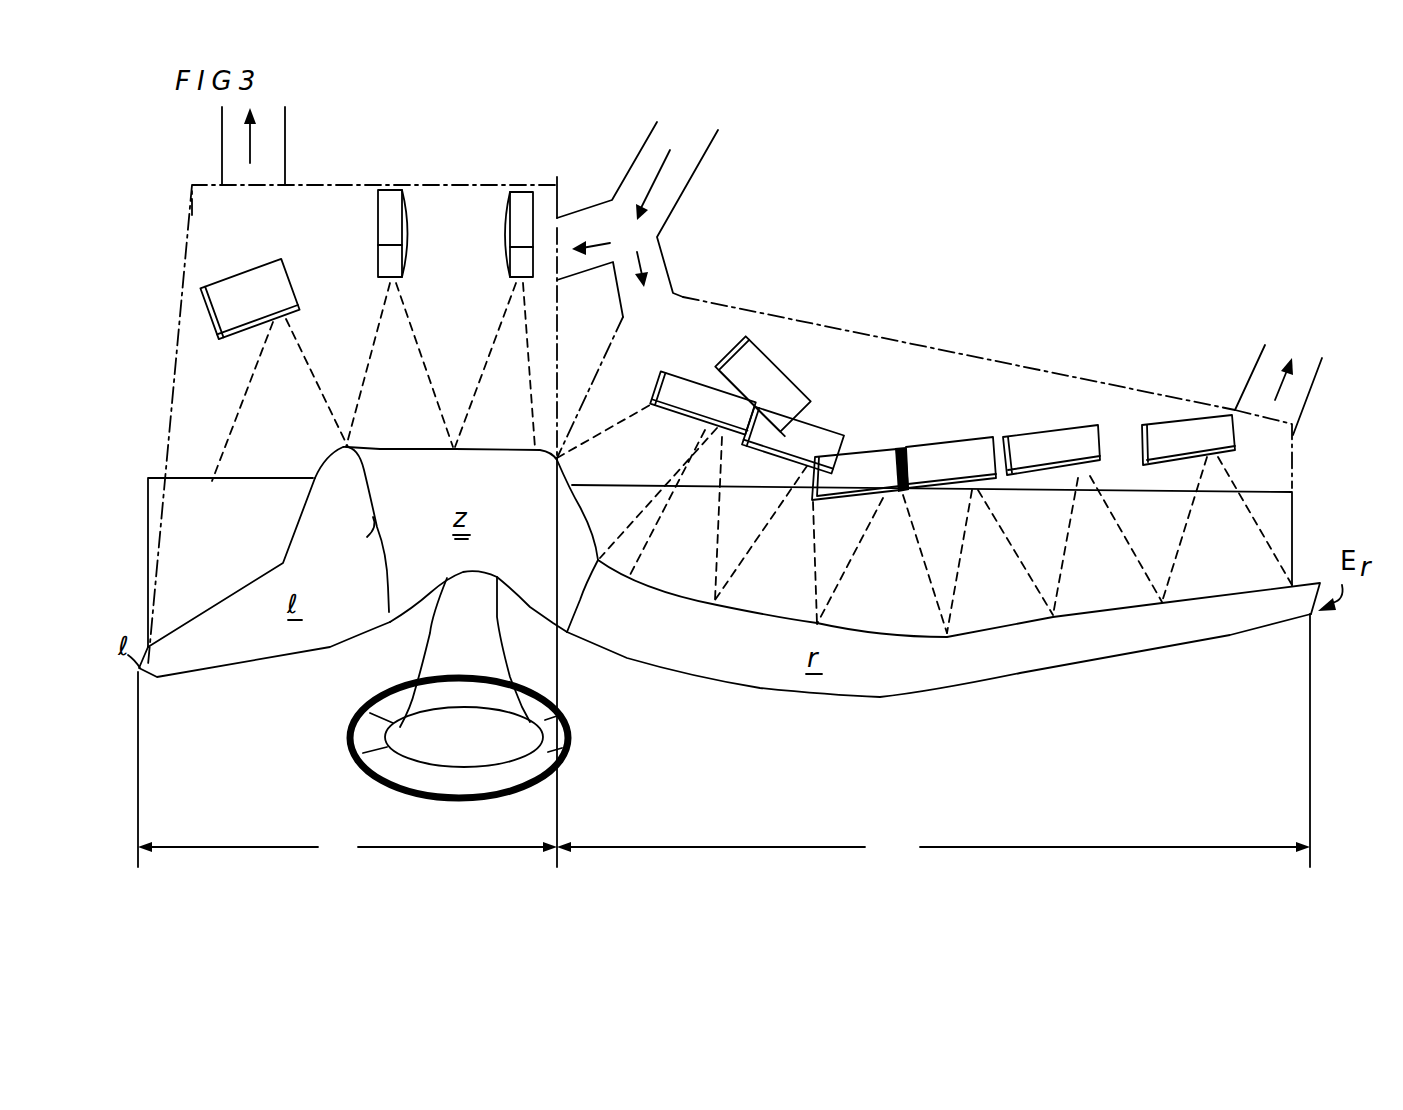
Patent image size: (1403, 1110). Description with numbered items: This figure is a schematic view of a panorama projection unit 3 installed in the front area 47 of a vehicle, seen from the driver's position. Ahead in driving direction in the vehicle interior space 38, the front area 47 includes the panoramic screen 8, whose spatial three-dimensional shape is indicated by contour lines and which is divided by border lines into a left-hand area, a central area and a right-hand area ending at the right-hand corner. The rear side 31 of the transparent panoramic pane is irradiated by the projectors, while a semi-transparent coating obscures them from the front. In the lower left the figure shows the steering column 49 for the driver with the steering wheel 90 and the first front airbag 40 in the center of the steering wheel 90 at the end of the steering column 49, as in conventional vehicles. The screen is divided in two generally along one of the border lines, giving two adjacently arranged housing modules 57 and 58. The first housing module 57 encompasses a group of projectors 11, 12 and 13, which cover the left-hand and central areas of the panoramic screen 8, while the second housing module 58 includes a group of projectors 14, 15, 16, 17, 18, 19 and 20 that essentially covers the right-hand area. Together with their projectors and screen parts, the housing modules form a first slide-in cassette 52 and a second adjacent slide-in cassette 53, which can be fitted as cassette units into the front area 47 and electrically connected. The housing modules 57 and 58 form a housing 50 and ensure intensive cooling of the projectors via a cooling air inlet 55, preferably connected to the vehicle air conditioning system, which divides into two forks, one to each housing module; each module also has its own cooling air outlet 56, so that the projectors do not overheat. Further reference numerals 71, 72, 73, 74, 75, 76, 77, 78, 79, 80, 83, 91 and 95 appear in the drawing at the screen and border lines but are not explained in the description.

The panorama projection unit 3 is at (1069, 243).
The panoramic screen 8 is at (880, 689).
The projector 11 is at (268, 280).
The projector 12 is at (380, 224).
The projector 13 is at (512, 240).
The projector 14 is at (735, 348).
The projector 15 is at (666, 385).
The projector 16 is at (813, 432).
The projector 17 is at (860, 463).
The projector 18 is at (953, 428).
The projector 19 is at (1040, 452).
The projector 20 is at (1172, 430).
The rear side 31 is at (302, 525).
The vehicle interior space 38 is at (1035, 800).
The first front airbag 40 is at (467, 757).
The front area 47 is at (629, 666).
The steering column 49 is at (492, 643).
The housing 50 is at (753, 284).
The first slide-in cassette 52 is at (347, 769).
The second slide-in cassette 53 is at (933, 740).
The cooling air inlet 55 is at (696, 160).
The cooling air outlet 56 is at (273, 152).
The housing module 57 is at (447, 178).
The housing module 58 is at (887, 338).
The measuring point 71 is at (218, 595).
The measuring point 72 is at (436, 448).
The measuring point 73 is at (528, 449).
The measuring point 74 is at (590, 537).
The measuring point 75 is at (690, 576).
The measuring point 76 is at (792, 616).
The measuring point 77 is at (923, 633).
The measuring point 78 is at (1040, 618).
The measuring point 79 is at (1148, 608).
The measuring point 80 is at (1266, 585).
The contour edge 83 is at (530, 505).
The steering wheel 90 is at (352, 740).
The inner contour 91 is at (363, 545).
The transition edge 95 is at (596, 596).